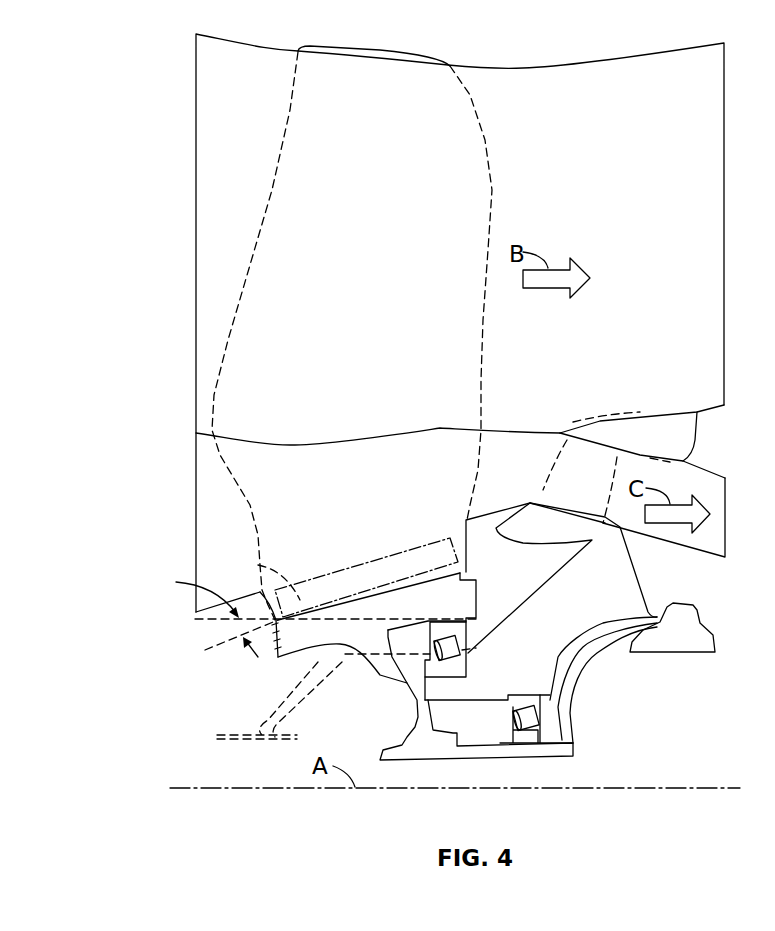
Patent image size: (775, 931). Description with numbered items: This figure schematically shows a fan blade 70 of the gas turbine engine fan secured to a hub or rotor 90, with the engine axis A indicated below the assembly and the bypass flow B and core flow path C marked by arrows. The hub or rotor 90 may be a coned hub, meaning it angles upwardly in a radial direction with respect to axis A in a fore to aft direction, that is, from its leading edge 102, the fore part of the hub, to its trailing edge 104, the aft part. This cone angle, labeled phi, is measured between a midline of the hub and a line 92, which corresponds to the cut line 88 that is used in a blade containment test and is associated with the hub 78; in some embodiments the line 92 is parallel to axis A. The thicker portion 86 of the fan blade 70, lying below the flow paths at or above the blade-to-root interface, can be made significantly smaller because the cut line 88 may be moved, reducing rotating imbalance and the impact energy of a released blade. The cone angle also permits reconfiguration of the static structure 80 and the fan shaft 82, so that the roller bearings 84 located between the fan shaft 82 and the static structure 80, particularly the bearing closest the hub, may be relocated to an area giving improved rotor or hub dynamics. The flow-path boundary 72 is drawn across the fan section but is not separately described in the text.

The fan blade 70 is at (194, 397).
The flow path boundary 72 is at (287, 392).
The hub 78 is at (258, 720).
The static structure 80 is at (618, 592).
The fan shaft 82 is at (580, 667).
The roller bearings 84 is at (452, 643).
The portion of the fan blade 86 is at (353, 567).
The cut line 88 is at (258, 567).
The hub or rotor 90 is at (390, 600).
The line 92 is at (256, 657).
The leading edge 102 is at (277, 657).
The trailing edge 104 is at (475, 593).